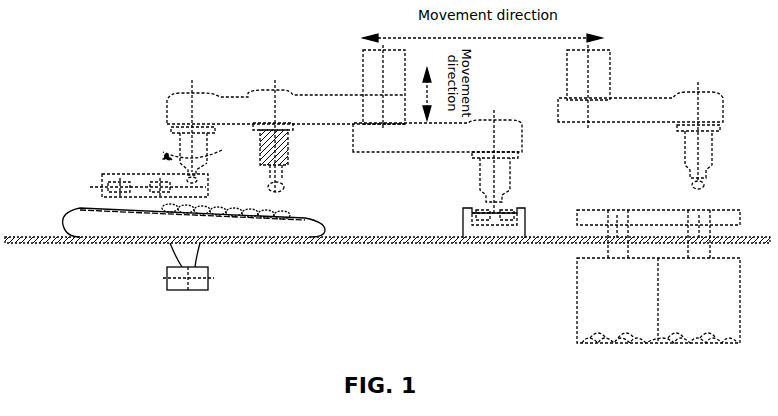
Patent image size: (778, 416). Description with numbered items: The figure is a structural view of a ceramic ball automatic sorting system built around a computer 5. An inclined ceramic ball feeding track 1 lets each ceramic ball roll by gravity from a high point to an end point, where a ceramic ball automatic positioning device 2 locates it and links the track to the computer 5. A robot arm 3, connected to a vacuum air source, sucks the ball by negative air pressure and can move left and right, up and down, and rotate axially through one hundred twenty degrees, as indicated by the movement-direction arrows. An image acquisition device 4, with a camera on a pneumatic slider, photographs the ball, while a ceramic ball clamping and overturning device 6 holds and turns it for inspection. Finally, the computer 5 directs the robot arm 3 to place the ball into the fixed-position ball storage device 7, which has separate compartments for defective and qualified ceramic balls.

The ceramic ball feeding track 1 is at (298, 220).
The ceramic ball automatic positioning device 2 is at (290, 215).
The robot arm 3 is at (292, 168).
The image acquisition device 4 is at (125, 178).
The computer 5 is at (208, 278).
The ceramic ball clamping and overturning device 6 is at (468, 240).
The ball storage device 7 is at (575, 224).